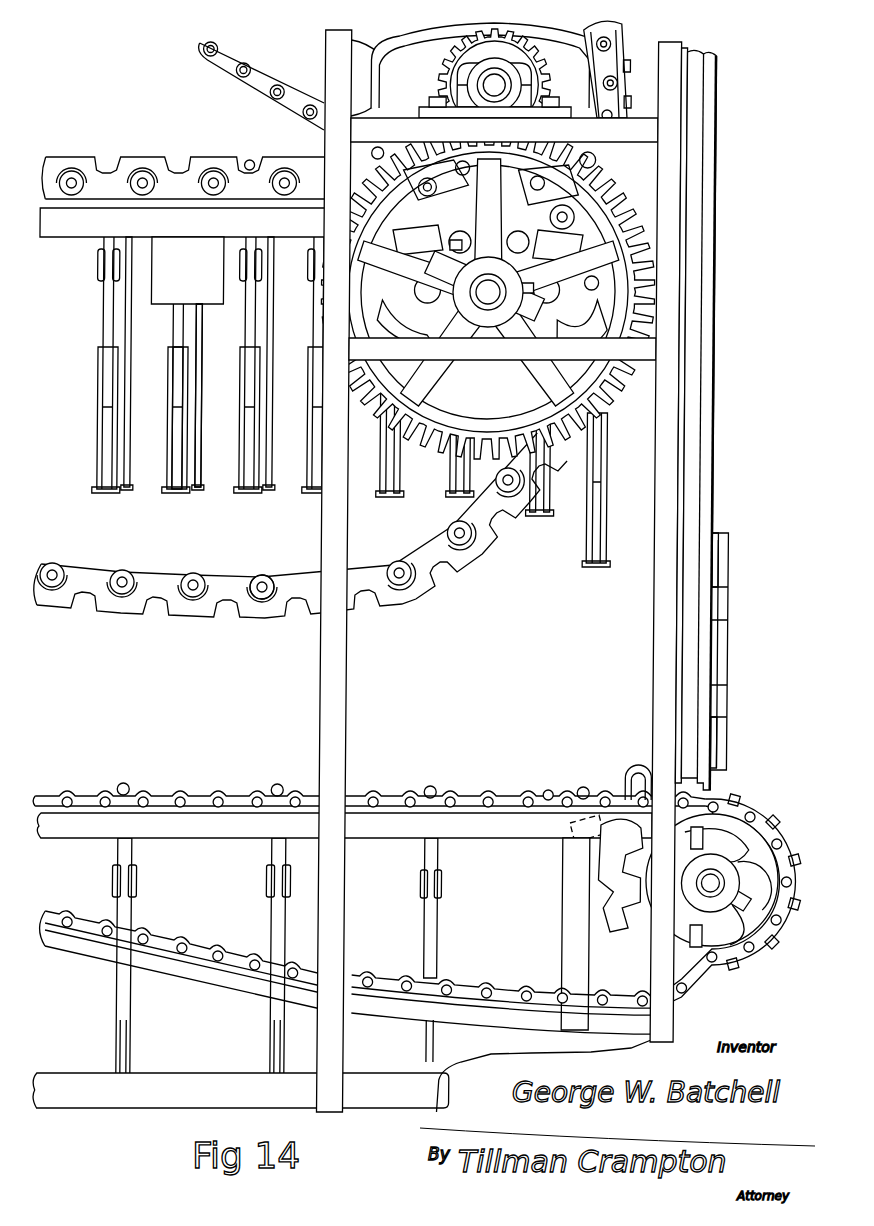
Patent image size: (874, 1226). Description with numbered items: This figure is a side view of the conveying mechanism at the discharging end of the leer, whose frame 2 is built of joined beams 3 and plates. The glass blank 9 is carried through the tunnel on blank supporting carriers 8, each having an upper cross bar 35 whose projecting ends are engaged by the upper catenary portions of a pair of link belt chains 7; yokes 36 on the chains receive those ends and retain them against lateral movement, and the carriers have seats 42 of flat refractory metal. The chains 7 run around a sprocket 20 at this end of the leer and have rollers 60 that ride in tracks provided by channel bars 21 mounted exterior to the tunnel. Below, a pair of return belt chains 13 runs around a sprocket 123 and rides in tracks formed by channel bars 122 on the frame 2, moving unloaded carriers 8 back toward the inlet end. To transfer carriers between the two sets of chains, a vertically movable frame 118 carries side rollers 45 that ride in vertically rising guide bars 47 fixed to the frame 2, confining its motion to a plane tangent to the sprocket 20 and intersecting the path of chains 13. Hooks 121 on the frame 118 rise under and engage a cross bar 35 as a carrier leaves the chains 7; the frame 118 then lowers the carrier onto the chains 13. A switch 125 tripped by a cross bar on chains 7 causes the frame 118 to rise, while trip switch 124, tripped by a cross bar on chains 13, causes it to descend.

The frame 2 is at (337, 716).
The beams 3 is at (666, 320).
The link belt chains 7 is at (193, 177).
The blank supporting carriers 8 is at (110, 440).
The glass blank 9 is at (201, 437).
The return belt chains 13 is at (506, 795).
The sprocket 20 is at (563, 272).
The channel bars 21 is at (88, 222).
The upper cross bar 35 is at (250, 160).
The yokes 36 is at (213, 605).
The seats 42 is at (177, 490).
The side rollers 45 is at (718, 565).
The guide bars 47 is at (704, 393).
The rollers 60 is at (268, 575).
The vertically movable frame 118 is at (718, 652).
The hooks 121 is at (638, 765).
The channel bars 122 is at (398, 830).
The sprocket 123 is at (748, 855).
The trip switch 124 is at (553, 790).
The switch 125 is at (173, 257).